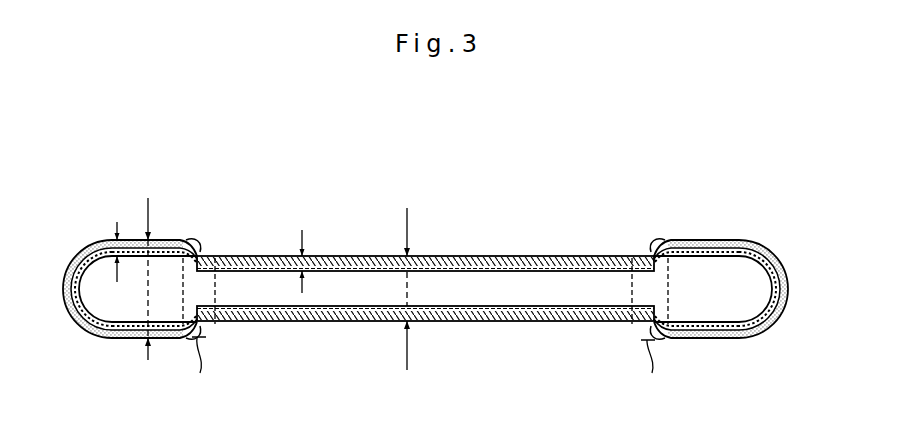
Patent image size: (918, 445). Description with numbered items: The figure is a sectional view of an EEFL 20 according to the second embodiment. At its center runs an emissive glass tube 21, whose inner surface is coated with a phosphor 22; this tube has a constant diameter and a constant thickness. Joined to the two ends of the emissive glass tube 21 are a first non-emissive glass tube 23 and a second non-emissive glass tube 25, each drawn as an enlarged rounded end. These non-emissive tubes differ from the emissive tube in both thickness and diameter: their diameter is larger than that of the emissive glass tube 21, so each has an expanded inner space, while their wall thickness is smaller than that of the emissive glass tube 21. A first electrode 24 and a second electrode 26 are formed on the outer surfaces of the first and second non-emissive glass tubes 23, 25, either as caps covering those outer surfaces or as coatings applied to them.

The EEFL 20 is at (136, 138).
The emissive glass tube 21 is at (518, 257).
The phosphor 22 is at (539, 322).
The first non-emissive glass tube 23 is at (184, 241).
The first electrode 24 is at (97, 240).
The second non-emissive glass tube 25 is at (700, 239).
The second electrode 26 is at (713, 336).